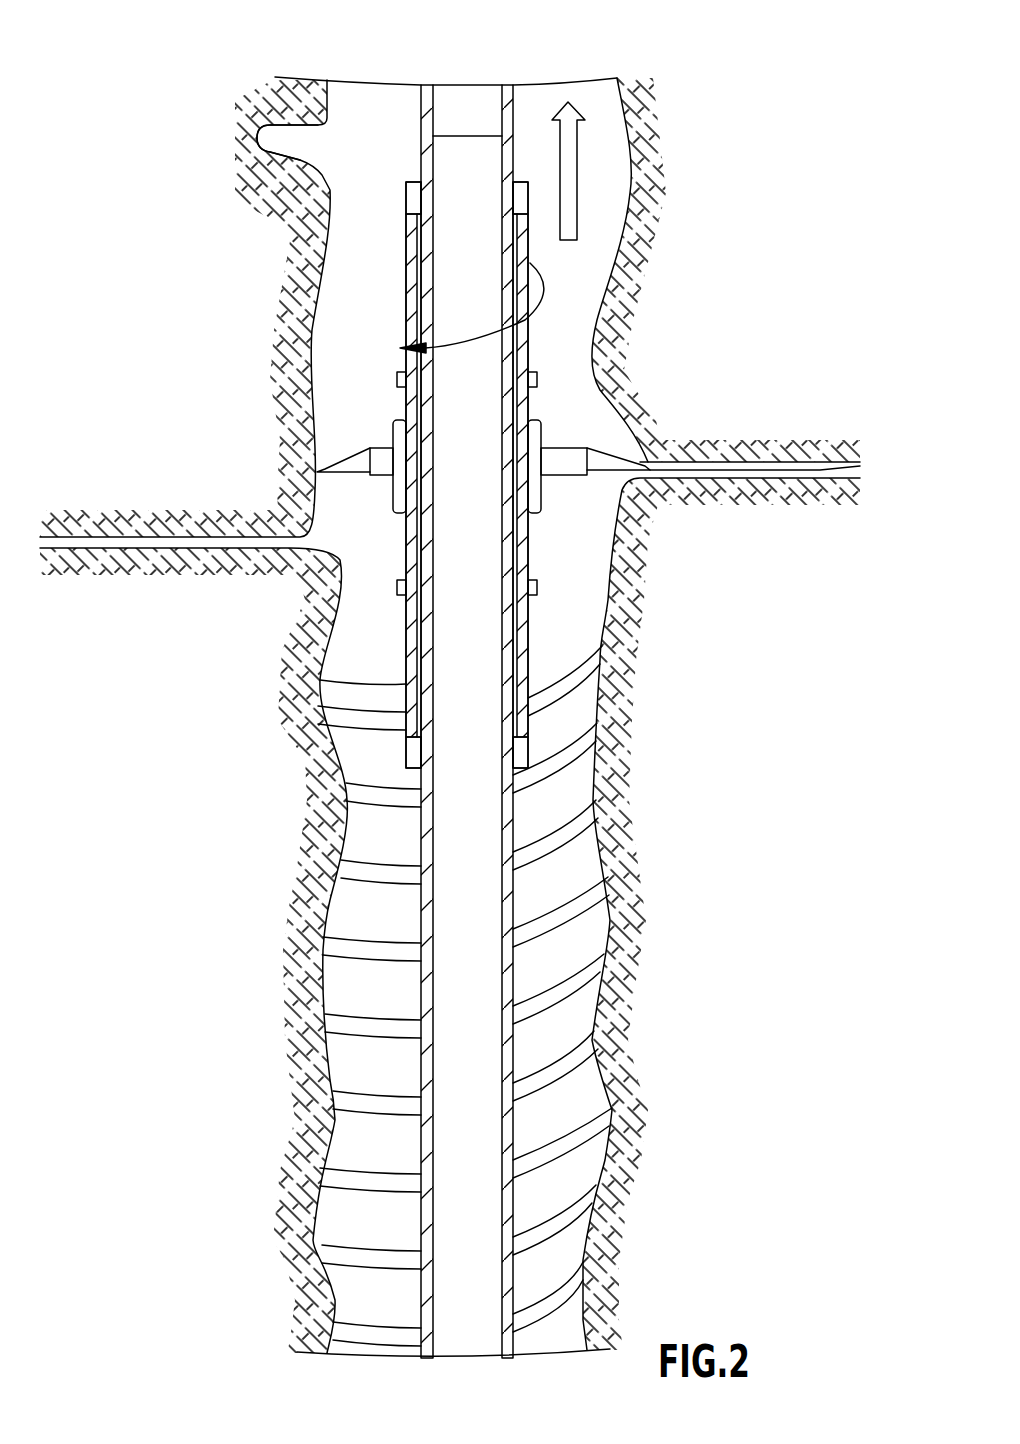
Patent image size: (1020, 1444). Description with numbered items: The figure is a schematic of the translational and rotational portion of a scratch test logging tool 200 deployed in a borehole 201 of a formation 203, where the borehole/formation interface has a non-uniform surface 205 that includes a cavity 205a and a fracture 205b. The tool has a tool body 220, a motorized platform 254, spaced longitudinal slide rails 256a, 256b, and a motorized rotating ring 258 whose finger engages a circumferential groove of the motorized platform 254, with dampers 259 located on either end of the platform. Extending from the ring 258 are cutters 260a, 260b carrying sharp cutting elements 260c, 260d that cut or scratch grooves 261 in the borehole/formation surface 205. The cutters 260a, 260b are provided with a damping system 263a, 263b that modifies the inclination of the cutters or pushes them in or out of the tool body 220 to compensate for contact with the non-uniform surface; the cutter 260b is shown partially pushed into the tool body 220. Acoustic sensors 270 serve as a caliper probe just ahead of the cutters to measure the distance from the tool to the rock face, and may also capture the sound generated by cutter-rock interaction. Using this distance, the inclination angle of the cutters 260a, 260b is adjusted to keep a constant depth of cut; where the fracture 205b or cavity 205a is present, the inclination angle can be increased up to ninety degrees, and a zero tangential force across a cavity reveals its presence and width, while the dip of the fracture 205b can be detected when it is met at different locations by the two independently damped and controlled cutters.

The scratch test logging tool 200 is at (345, 390).
The borehole 201 is at (383, 120).
The formation 203 is at (268, 96).
The non-uniform surface 205 is at (606, 96).
The cavity 205a is at (270, 145).
The fracture 205b is at (305, 558).
The tool body 220 is at (515, 985).
The motorized platform 254 is at (345, 685).
The longitudinal slide rail 256a is at (530, 700).
The longitudinal slide rail 256b is at (406, 290).
The motorized rotating ring 258 is at (530, 518).
The damper 259 is at (522, 198).
The cutter 260a is at (578, 448).
The cutter 260b is at (393, 480).
The sharp cutting element 260c is at (632, 462).
The sharp cutting element 260d is at (322, 470).
The grooves 261 is at (345, 1028).
The damping system 263a is at (530, 476).
The damping system 263b is at (400, 490).
The acoustic sensor 270 is at (397, 378).